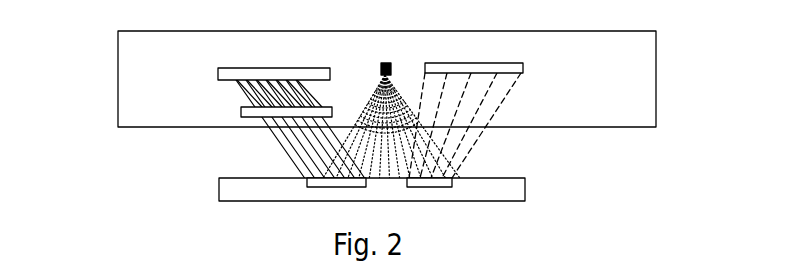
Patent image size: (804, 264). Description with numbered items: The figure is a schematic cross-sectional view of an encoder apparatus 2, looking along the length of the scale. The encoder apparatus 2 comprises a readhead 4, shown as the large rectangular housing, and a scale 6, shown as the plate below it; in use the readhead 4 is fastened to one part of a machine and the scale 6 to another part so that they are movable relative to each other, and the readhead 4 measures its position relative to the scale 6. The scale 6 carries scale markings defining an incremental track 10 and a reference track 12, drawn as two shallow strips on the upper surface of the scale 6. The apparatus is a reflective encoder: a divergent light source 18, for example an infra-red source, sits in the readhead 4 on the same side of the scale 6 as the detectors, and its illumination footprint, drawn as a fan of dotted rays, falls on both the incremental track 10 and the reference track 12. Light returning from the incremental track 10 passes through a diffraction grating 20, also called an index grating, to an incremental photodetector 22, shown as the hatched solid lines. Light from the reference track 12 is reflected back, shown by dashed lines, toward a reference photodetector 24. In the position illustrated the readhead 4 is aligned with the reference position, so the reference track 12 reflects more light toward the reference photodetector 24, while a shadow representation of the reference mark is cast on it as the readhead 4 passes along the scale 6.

The encoder apparatus 2 is at (85, 59).
The readhead 4 is at (660, 73).
The scale 6 is at (527, 188).
The incremental track 10 is at (310, 187).
The reference track 12 is at (453, 188).
The light source 18 is at (389, 60).
The diffraction grating 20 is at (238, 109).
The incremental photodetector 22 is at (218, 74).
The reference photodetector 24 is at (524, 69).